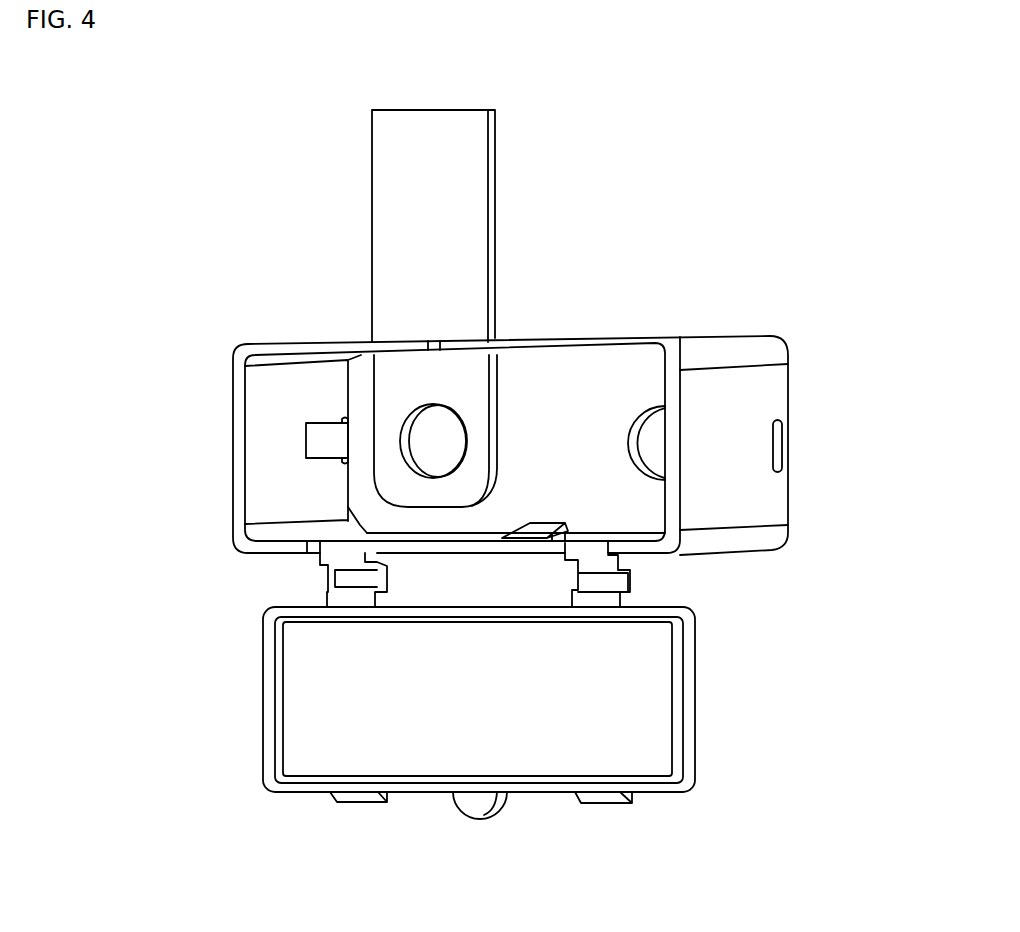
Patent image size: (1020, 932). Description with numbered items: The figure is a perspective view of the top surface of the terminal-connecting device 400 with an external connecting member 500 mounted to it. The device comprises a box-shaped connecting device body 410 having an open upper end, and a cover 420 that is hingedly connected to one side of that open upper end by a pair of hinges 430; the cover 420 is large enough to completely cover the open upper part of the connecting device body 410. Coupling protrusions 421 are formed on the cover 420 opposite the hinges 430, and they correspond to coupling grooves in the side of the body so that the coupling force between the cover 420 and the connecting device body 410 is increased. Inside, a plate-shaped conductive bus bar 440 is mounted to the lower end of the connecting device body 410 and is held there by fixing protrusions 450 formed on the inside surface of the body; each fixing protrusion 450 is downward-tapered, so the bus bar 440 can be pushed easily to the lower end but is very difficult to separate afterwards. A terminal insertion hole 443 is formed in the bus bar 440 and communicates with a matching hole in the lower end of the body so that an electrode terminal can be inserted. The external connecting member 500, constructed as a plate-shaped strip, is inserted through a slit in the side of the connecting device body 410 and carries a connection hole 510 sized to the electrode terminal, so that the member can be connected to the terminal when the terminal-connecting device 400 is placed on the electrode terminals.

The terminal-connecting device 400 is at (183, 317).
The connecting device body 410 is at (757, 508).
The cover 420 is at (688, 702).
The coupling protrusions 421 is at (613, 798).
The hinges 430 is at (365, 580).
The bus bar 440 is at (367, 493).
The terminal insertion hole 443 is at (660, 433).
The fixing protrusions 450 is at (313, 435).
The external connecting member 500 is at (468, 198).
The connection hole 510 is at (453, 440).